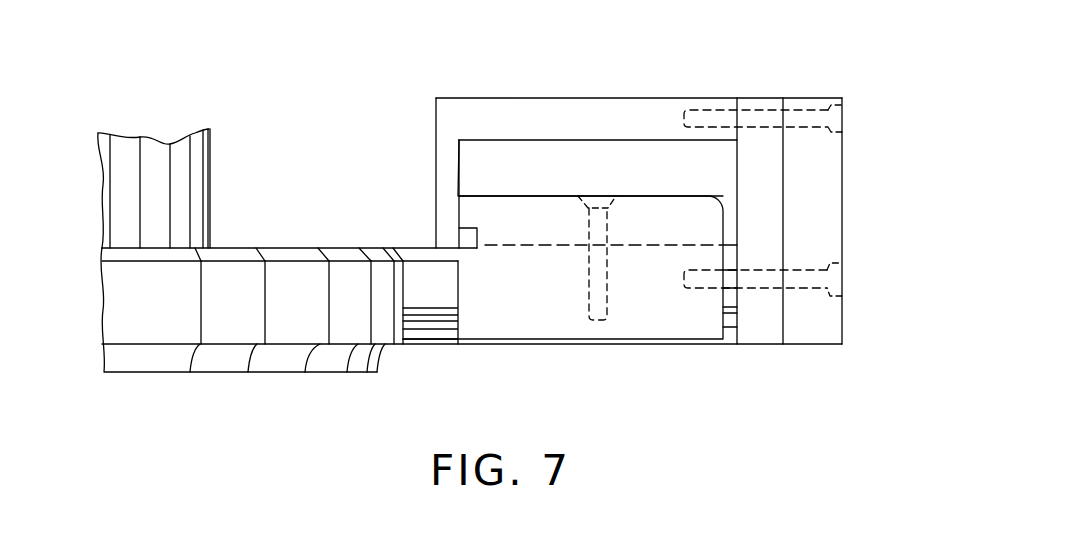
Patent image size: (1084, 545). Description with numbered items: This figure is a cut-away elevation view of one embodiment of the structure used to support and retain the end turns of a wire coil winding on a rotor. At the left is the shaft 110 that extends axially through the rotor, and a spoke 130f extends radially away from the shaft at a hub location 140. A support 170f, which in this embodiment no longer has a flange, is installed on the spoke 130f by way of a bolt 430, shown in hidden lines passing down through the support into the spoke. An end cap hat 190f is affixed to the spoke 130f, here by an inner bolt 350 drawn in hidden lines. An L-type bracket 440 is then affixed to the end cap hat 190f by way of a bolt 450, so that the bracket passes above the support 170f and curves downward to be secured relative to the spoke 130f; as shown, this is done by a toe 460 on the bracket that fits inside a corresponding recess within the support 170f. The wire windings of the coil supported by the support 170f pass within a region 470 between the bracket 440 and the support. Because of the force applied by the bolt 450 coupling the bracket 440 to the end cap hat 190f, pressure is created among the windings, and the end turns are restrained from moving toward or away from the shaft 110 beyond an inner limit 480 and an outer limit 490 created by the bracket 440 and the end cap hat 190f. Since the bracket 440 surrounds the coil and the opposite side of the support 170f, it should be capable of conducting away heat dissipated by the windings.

The shaft 110 is at (210, 157).
The hub location 140 is at (268, 248).
The spoke 130f is at (437, 326).
The L-type bracket 440 is at (577, 98).
The inner limit 480 is at (457, 98).
The outer limit 490 is at (737, 98).
The bolt 450 is at (847, 127).
The inner bolt 350 is at (845, 278).
The end cap hat 190f is at (843, 226).
The support 170f is at (555, 196).
The bolt 430 is at (593, 196).
The region 470 is at (717, 182).
The toe 460 is at (471, 232).